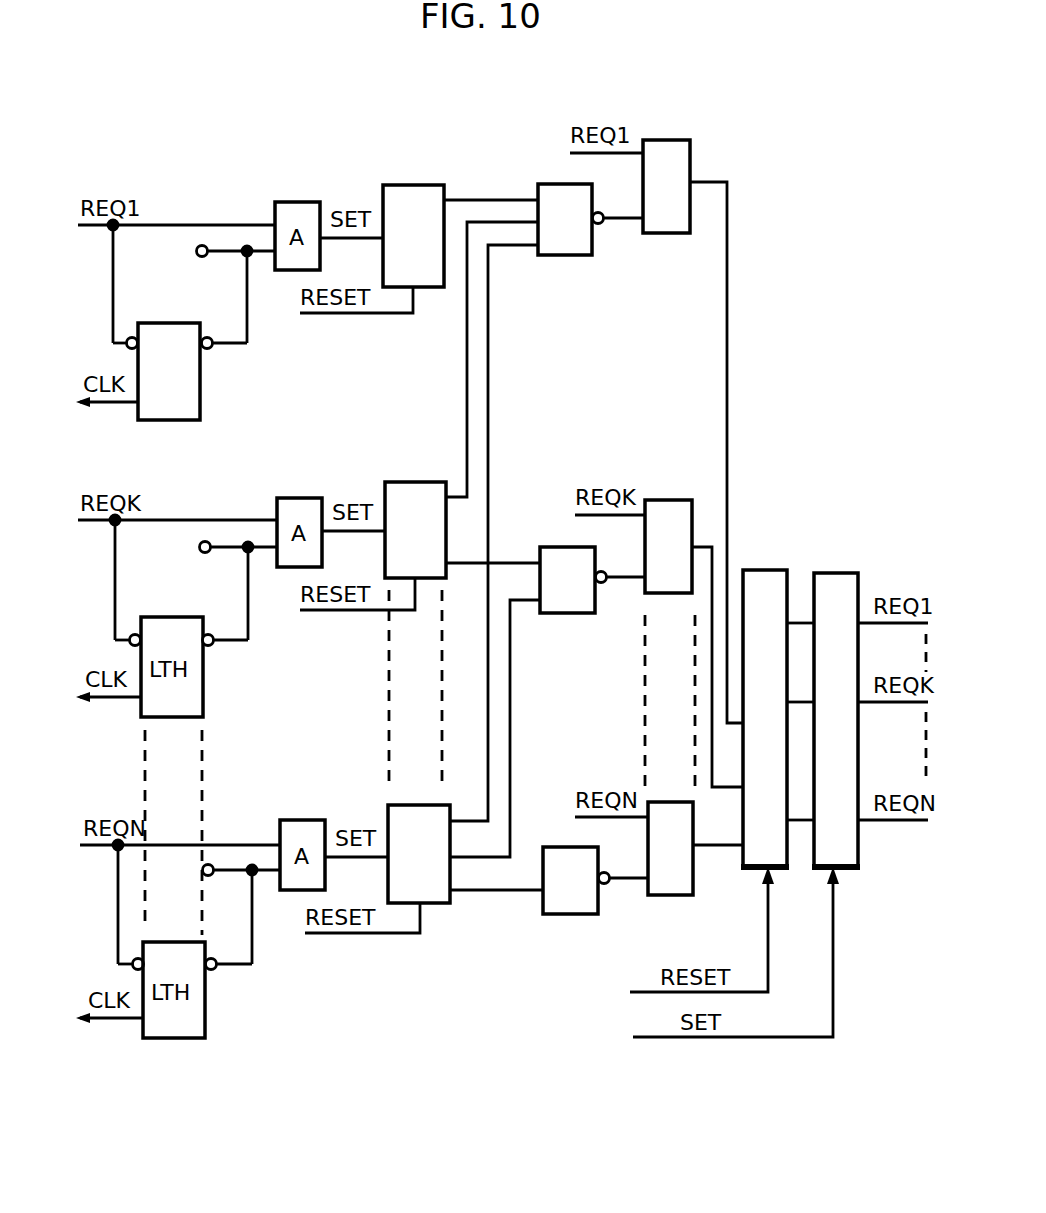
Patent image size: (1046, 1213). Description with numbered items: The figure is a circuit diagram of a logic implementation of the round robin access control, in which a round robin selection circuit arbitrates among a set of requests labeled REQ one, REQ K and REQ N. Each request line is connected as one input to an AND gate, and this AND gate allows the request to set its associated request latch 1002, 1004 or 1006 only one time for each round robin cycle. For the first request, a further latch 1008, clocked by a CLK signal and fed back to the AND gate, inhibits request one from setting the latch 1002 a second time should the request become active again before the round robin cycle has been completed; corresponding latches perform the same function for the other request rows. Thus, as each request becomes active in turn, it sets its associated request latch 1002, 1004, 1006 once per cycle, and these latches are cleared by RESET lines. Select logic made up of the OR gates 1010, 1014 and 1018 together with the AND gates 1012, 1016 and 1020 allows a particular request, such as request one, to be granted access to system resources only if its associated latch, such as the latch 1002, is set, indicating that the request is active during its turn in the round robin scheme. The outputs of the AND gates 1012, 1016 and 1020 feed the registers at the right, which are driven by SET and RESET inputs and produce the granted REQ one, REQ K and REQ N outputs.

The latch 1002 is at (405, 185).
The latch 1004 is at (408, 482).
The latch 1006 is at (386, 810).
The latch 1008 is at (177, 420).
The OR gate 1010 is at (565, 255).
The AND gate 1012 is at (670, 233).
The OR gate 1014 is at (567, 613).
The AND gate 1016 is at (672, 500).
The OR gate 1018 is at (570, 914).
The AND gate 1020 is at (670, 895).